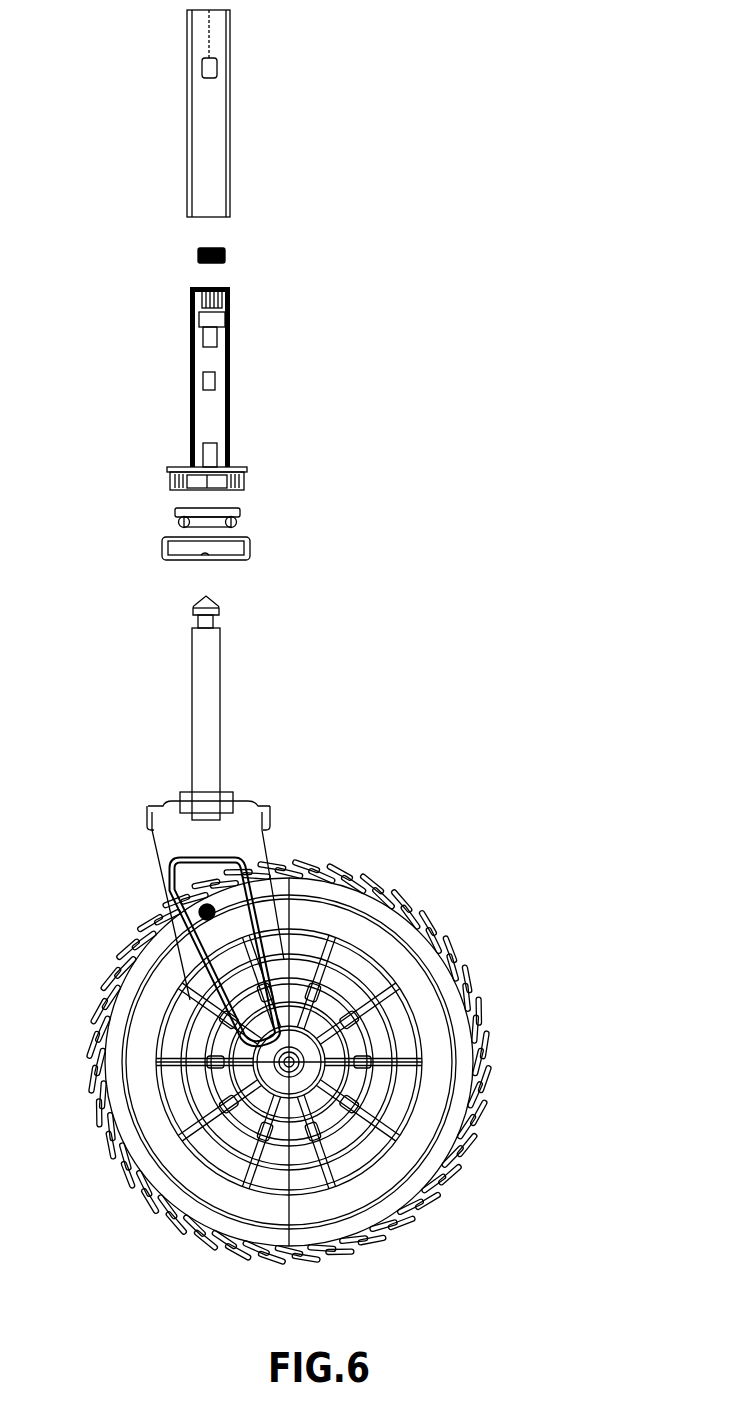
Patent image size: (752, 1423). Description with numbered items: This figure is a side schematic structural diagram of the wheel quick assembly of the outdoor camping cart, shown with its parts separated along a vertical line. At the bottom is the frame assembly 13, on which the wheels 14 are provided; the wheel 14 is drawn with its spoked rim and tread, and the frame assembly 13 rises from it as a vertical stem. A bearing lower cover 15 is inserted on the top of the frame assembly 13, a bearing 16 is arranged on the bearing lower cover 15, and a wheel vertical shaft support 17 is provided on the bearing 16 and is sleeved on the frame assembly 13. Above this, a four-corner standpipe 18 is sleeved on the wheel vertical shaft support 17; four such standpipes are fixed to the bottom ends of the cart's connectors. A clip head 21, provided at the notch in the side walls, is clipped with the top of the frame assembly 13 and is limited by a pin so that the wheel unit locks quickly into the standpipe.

The frame assembly 13 is at (220, 728).
The wheels 14 is at (438, 933).
The bearing lower cover 15 is at (248, 547).
The bearing 16 is at (240, 513).
The wheel vertical shaft support 17 is at (190, 422).
The four-corner standpipe 18 is at (232, 113).
The clip head 21 is at (225, 255).